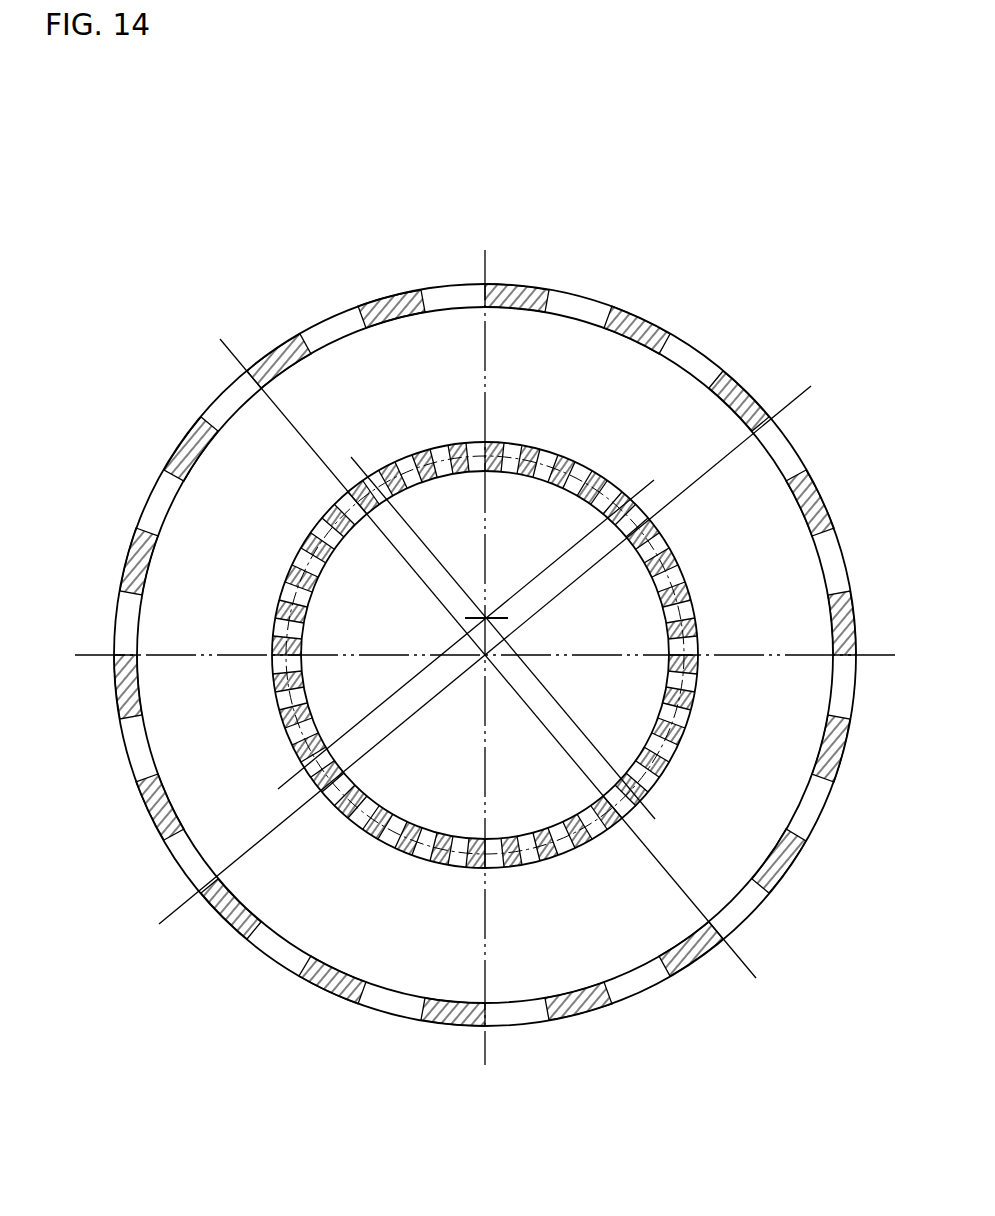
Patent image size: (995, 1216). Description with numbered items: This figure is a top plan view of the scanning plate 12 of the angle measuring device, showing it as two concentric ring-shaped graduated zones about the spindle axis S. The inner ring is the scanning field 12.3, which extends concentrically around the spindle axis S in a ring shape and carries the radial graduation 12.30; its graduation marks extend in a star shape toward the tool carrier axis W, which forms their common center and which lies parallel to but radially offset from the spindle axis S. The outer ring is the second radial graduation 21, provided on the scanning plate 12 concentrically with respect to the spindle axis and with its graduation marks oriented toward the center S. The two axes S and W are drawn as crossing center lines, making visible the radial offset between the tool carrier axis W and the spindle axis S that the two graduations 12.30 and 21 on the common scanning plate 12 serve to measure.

The second radial graduation 21 is at (447, 284).
The scanning plate 12 is at (657, 443).
The scanning field 12.3 is at (290, 553).
The radial graduation 12.30 is at (392, 470).
The axis of rotation of the tool carrier W is at (486, 606).
The spindle axis S is at (491, 663).